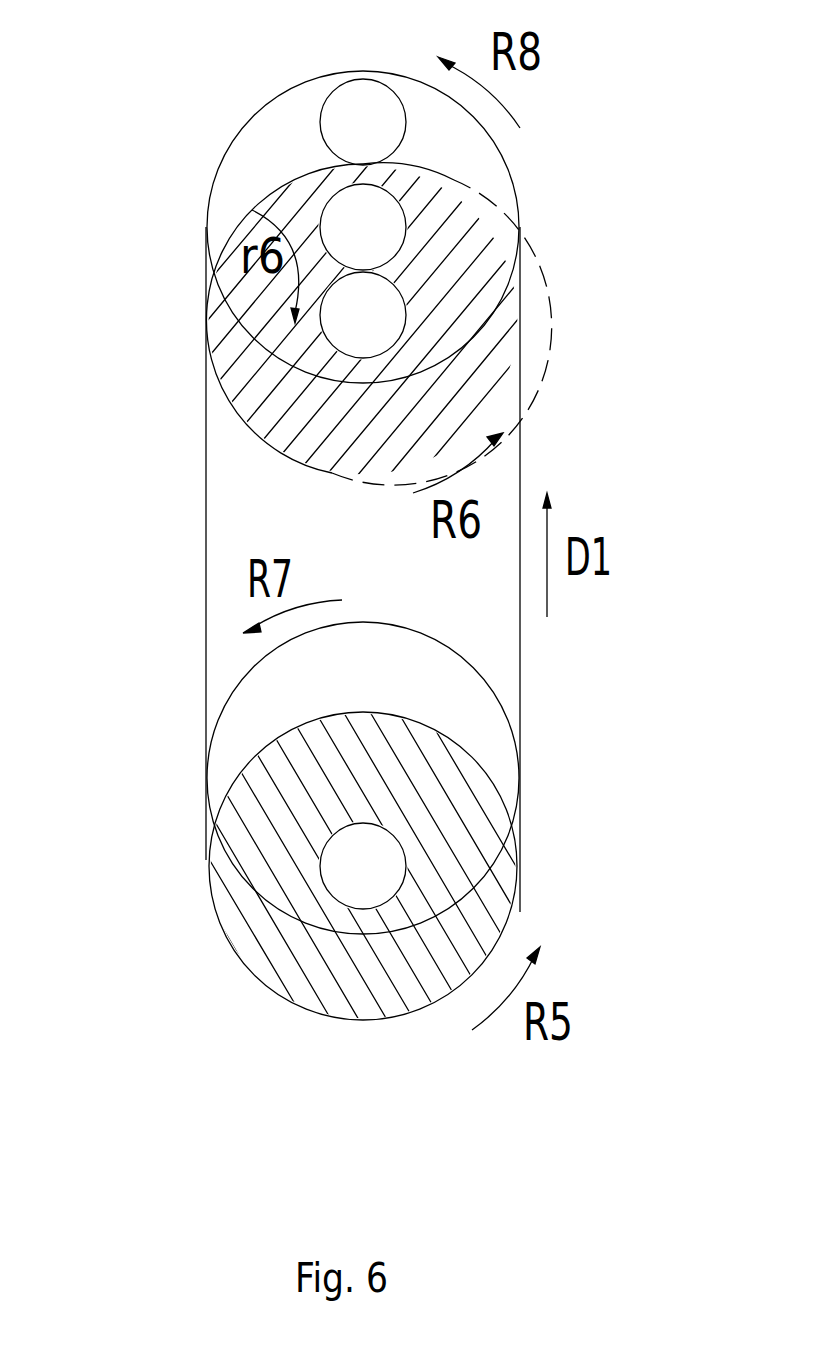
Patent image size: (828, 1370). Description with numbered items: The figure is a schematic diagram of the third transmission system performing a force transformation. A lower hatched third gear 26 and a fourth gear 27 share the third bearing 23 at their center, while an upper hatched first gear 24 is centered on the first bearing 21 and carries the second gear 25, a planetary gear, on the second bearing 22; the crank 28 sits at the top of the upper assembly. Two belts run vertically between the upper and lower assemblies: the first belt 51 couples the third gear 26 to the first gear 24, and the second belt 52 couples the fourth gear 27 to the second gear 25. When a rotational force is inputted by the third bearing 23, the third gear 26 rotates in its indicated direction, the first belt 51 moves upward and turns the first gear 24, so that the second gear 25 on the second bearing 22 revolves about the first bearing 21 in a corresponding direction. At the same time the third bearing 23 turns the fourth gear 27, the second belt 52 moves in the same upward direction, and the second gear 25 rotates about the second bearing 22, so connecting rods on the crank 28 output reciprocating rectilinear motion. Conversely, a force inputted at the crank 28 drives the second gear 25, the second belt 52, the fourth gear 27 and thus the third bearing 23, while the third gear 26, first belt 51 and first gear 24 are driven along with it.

The first bearing 21 is at (363, 315).
The second bearing 22 is at (363, 227).
The third bearing 23 is at (363, 866).
The first gear 24 is at (207, 320).
The second gear 25 is at (207, 187).
The third gear 26 is at (208, 902).
The fourth gear 27 is at (212, 718).
The crank 28 is at (363, 122).
The first belt 51 is at (520, 822).
The second belt 52 is at (520, 267).